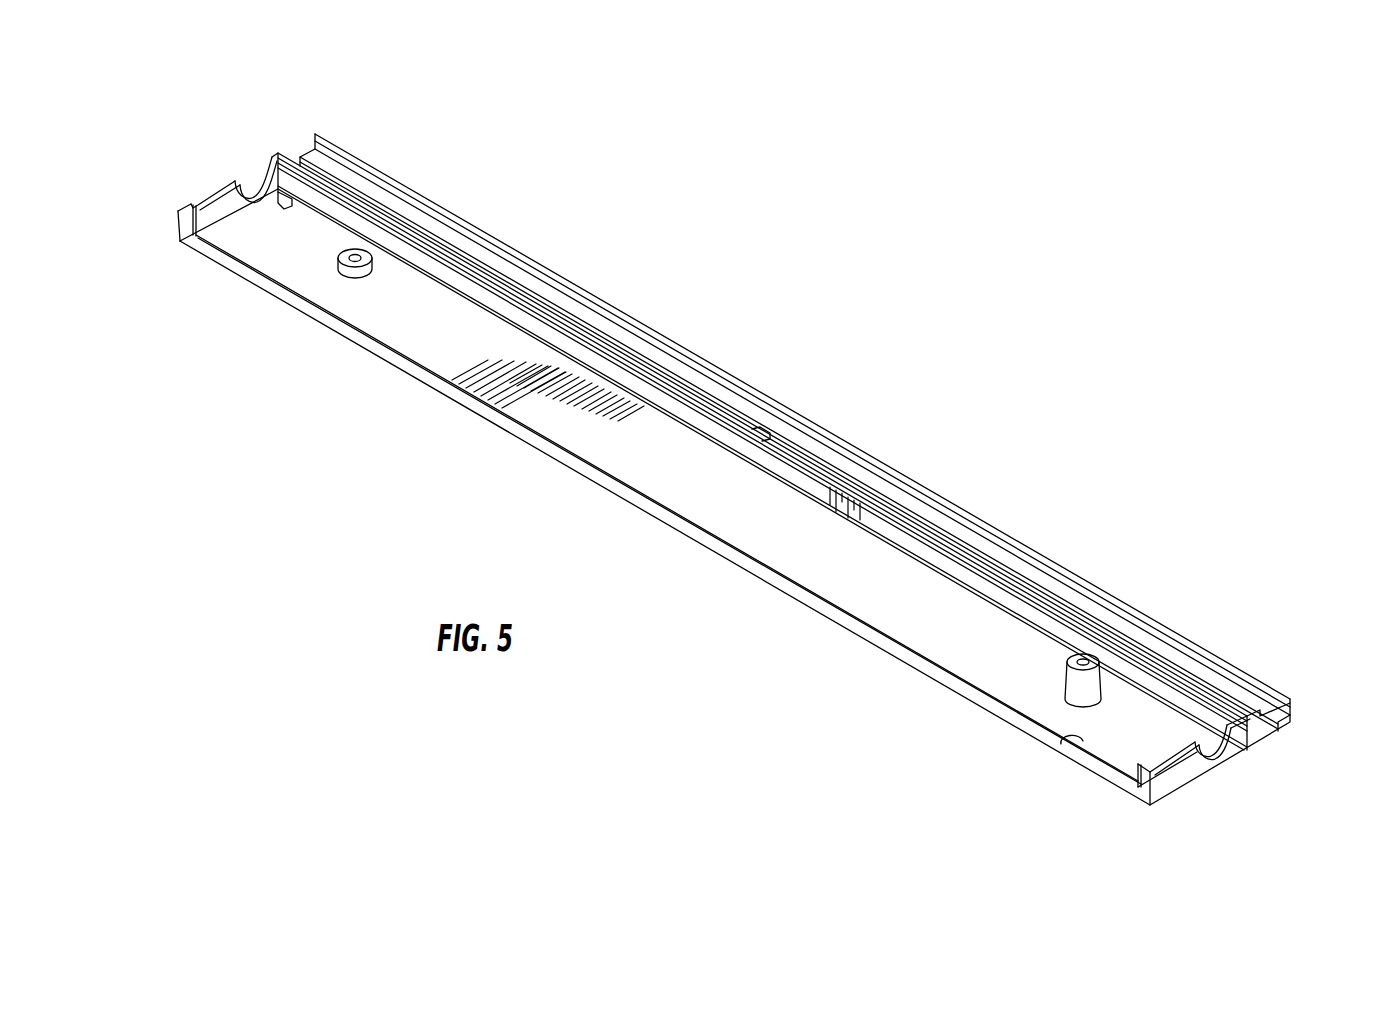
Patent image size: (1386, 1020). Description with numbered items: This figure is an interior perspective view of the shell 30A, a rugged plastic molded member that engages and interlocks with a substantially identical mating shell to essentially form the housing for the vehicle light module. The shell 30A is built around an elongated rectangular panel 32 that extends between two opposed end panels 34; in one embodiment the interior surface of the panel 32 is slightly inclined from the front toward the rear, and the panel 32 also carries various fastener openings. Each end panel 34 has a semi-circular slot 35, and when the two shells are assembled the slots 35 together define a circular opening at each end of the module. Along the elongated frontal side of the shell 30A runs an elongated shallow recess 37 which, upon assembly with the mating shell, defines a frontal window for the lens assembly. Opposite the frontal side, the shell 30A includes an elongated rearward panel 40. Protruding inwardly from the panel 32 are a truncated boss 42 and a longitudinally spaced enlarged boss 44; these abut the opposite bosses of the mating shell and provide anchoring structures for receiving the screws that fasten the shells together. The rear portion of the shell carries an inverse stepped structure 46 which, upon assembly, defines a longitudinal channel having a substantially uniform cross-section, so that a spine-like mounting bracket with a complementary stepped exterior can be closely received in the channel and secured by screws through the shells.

The shell 30A is at (874, 688).
The elongated rectangular panel 32 is at (730, 506).
The end panel 34 is at (213, 200).
The semi-circular slot 35 is at (256, 167).
The elongated shallow recess 37 is at (1077, 755).
The elongated rearward panel 40 is at (540, 325).
The truncated boss 42 is at (347, 282).
The enlarged boss 44 is at (1082, 655).
The inverse stepped structure 46 is at (1265, 700).